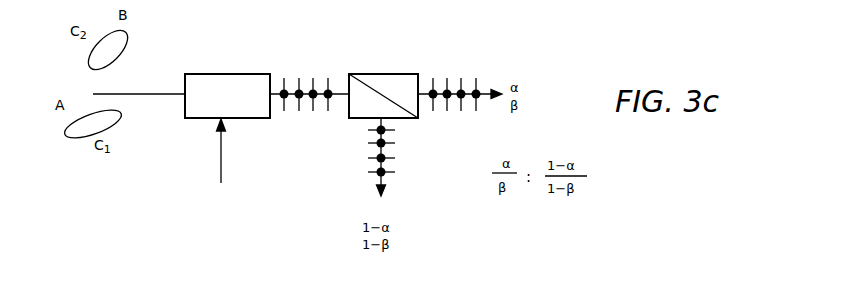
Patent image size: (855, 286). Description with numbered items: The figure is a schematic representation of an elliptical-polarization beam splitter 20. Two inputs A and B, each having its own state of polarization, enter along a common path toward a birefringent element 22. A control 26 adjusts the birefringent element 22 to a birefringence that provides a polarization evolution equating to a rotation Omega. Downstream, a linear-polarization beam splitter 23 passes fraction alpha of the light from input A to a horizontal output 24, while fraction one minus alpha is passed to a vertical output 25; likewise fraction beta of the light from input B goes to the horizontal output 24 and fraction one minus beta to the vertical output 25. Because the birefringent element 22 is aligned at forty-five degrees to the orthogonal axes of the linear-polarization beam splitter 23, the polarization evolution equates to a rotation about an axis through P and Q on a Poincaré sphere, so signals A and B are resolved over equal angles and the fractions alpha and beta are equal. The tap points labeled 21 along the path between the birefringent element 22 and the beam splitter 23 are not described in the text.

The elliptical-polarization beam splitter 20 is at (292, 206).
The input detector taps 21 is at (285, 86).
The birefringent element 22 is at (236, 106).
The linear-polarization beam splitter 23 is at (393, 74).
The horizontal output 24 is at (453, 90).
The vertical output 25 is at (378, 141).
The control 26 is at (221, 157).